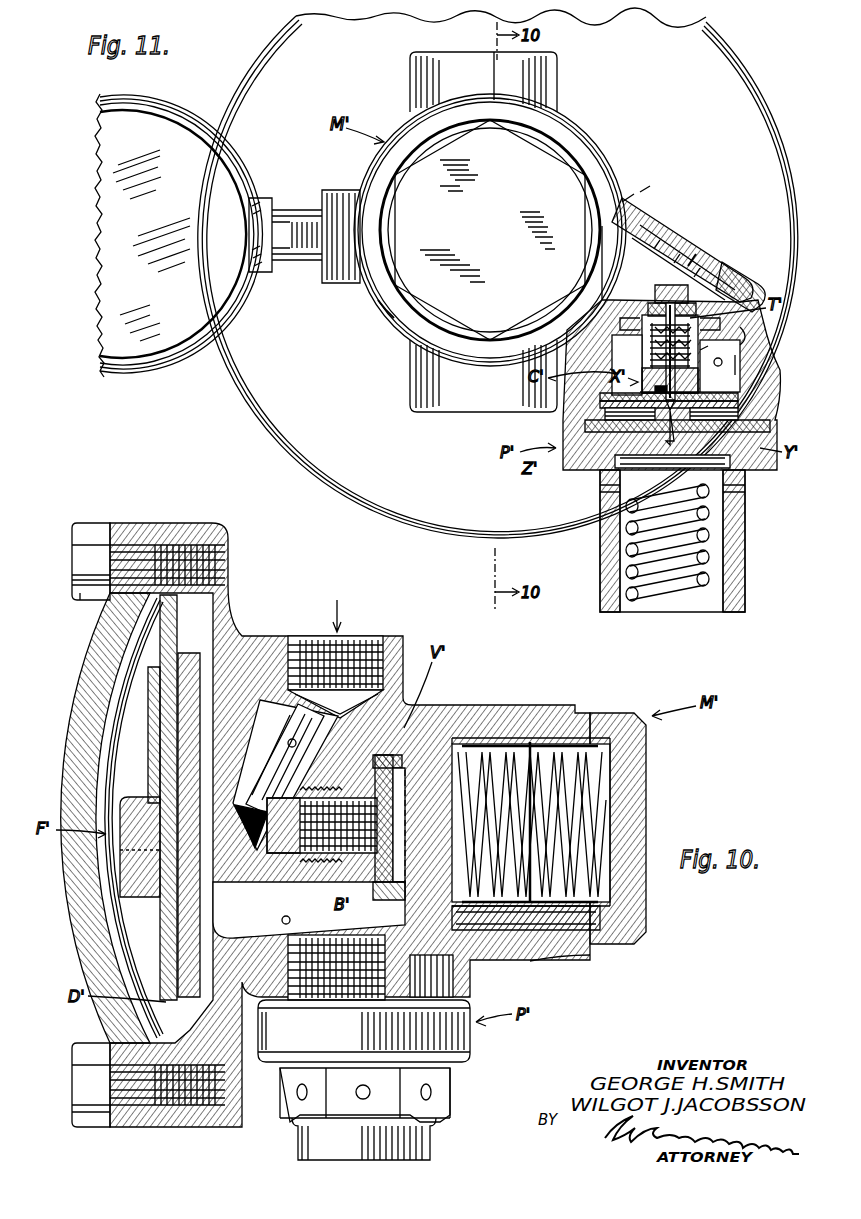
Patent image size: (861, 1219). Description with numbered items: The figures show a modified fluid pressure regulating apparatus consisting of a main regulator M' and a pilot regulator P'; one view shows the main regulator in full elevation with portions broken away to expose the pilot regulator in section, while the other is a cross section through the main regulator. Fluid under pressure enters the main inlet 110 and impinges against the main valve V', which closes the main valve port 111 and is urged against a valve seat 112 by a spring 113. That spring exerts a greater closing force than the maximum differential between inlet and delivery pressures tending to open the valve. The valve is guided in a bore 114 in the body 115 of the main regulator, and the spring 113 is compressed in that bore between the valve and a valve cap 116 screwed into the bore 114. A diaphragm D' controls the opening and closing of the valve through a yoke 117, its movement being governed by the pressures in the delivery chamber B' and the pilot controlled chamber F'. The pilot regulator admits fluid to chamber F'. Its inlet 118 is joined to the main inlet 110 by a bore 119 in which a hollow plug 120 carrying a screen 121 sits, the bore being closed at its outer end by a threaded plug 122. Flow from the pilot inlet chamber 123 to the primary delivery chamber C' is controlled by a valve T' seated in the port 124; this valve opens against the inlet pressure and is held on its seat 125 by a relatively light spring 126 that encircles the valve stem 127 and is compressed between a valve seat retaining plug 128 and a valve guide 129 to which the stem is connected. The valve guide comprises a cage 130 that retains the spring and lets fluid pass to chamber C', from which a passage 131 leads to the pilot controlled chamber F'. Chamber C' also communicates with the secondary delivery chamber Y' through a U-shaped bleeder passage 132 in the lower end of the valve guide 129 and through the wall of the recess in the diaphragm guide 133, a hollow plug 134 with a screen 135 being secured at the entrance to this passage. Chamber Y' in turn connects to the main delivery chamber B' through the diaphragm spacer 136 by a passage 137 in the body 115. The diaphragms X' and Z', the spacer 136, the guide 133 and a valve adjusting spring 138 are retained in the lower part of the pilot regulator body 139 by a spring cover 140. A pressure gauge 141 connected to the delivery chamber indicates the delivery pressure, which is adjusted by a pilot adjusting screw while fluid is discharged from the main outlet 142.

In FIG. 11, the main inlet 110 is at (466, 56).
In FIG. 10, the main inlet 110 is at (358, 636).
In FIG. 10, the main valve port 111 is at (320, 835).
In FIG. 10, the valve seat 112 is at (362, 796).
In FIG. 10, the spring 113 is at (608, 768).
In FIG. 10, the bore 114 is at (482, 934).
In FIG. 11, the body 115 is at (395, 320).
In FIG. 10, the body 115 is at (550, 958).
In FIG. 11, the valve cap 116 is at (490, 230).
In FIG. 10, the valve cap 116 is at (646, 800).
In FIG. 10, the yoke 117 is at (244, 890).
In FIG. 11, the inlet 118 is at (698, 252).
In FIG. 11, the bore 119 is at (630, 206).
In FIG. 10, the bore 119 is at (295, 743).
In FIG. 11, the hollow plug 120 is at (666, 238).
In FIG. 11, the screen 121 is at (654, 212).
In FIG. 11, the plug 122 is at (700, 296).
In FIG. 11, the pilot inlet chamber 123 is at (670, 306).
In FIG. 11, the port 124 is at (700, 318).
In FIG. 11, the seat 125 is at (660, 333).
In FIG. 11, the spring 126 is at (738, 364).
In FIG. 11, the valve stem 127 is at (650, 334).
In FIG. 11, the valve seat retaining plug 128 is at (642, 371).
In FIG. 11, the valve guide 129 is at (680, 394).
In FIG. 11, the cage 130 is at (750, 342).
In FIG. 11, the passage 131 is at (756, 376).
In FIG. 11, the U-shaped bleeder passage 132 is at (742, 406).
In FIG. 11, the diaphragm guide 133 is at (628, 462).
In FIG. 11, the hollow plug 134 is at (616, 353).
In FIG. 11, the screen 135 is at (680, 384).
In FIG. 11, the diaphragm spacer 136 is at (586, 430).
In FIG. 11, the passage 137 is at (455, 412).
In FIG. 10, the passage 137 is at (290, 920).
In FIG. 11, the valve adjusting spring 138 is at (630, 572).
In FIG. 11, the pilot regulator body 139 is at (738, 268).
In FIG. 11, the spring cover 140 is at (726, 540).
In FIG. 10, the spring cover 140 is at (432, 1147).
In FIG. 11, the pressure gauge 141 is at (122, 366).
In FIG. 10, the main outlet 142 is at (316, 1004).